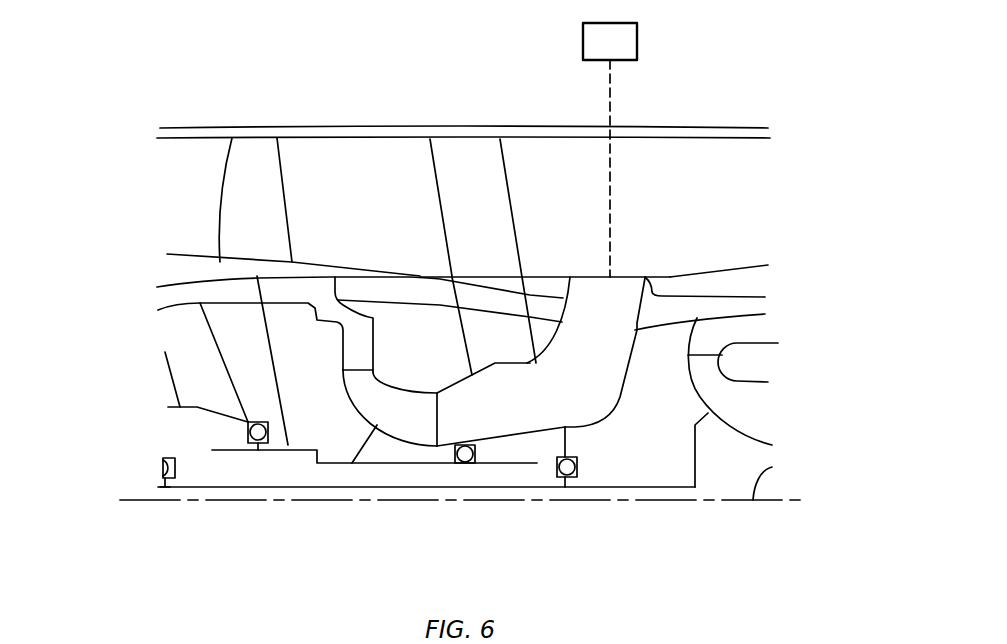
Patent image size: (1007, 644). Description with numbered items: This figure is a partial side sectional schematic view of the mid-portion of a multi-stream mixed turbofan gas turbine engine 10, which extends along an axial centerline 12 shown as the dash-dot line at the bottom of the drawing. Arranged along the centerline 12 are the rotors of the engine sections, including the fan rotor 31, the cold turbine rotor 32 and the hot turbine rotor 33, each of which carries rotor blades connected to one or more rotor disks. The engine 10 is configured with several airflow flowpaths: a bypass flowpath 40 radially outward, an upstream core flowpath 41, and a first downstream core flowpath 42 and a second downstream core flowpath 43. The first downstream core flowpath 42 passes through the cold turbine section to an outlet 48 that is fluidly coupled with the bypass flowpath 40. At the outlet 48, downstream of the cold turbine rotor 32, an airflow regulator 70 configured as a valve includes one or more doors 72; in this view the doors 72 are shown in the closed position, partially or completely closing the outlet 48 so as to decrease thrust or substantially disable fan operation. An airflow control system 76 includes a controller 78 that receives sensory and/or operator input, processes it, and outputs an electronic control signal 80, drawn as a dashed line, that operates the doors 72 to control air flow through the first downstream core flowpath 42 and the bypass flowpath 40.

The turbine engine 10 is at (768, 87).
The axial centerline 12 is at (772, 502).
The rotor 31 is at (300, 392).
The cold turbine rotor 32 is at (365, 440).
The rotor 33 is at (698, 468).
The bypass flowpath 40 is at (698, 199).
The upstream core flowpath 41 is at (147, 302).
The first downstream core flowpath 42 is at (519, 402).
The second downstream core flowpath 43 is at (746, 307).
The outlet 48 is at (585, 277).
The airflow regulator 70 is at (676, 261).
The doors 72 is at (637, 277).
The airflow control system 76 is at (650, 37).
The controller 78 is at (598, 52).
The electronic control signal 80 is at (603, 97).